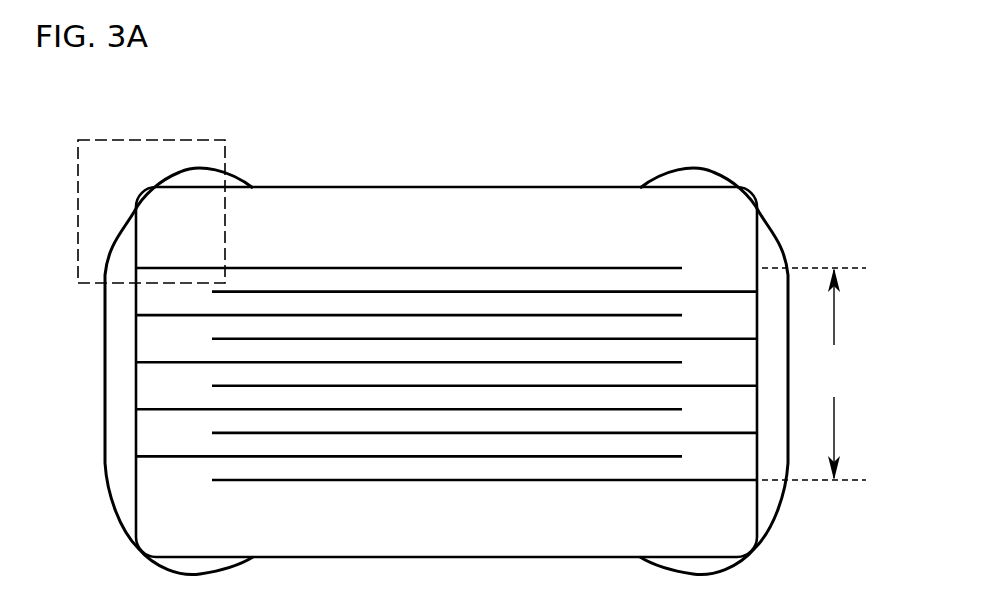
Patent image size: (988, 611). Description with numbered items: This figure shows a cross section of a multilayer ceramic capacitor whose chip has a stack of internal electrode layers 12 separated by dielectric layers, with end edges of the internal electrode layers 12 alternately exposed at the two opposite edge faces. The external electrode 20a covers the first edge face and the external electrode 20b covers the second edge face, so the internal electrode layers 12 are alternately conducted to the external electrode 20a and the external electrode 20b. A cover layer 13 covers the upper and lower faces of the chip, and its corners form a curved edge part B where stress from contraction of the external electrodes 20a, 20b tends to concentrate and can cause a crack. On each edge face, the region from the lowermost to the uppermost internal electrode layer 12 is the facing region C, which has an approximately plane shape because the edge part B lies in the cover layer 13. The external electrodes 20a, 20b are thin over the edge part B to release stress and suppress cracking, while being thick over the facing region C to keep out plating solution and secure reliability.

The internal electrode layers 12 is at (513, 268).
The cover layer 13 is at (405, 205).
The external electrode 20a is at (107, 383).
The external electrode 20b is at (690, 170).
The edge part B is at (138, 203).
The facing region C is at (814, 374).